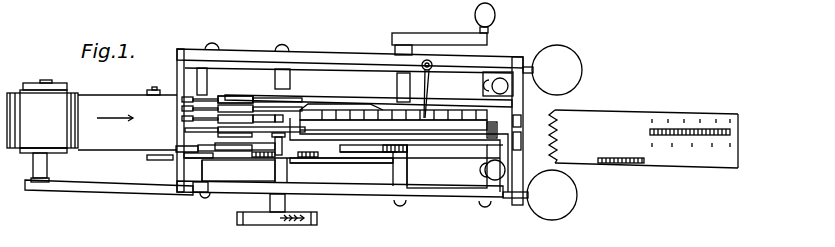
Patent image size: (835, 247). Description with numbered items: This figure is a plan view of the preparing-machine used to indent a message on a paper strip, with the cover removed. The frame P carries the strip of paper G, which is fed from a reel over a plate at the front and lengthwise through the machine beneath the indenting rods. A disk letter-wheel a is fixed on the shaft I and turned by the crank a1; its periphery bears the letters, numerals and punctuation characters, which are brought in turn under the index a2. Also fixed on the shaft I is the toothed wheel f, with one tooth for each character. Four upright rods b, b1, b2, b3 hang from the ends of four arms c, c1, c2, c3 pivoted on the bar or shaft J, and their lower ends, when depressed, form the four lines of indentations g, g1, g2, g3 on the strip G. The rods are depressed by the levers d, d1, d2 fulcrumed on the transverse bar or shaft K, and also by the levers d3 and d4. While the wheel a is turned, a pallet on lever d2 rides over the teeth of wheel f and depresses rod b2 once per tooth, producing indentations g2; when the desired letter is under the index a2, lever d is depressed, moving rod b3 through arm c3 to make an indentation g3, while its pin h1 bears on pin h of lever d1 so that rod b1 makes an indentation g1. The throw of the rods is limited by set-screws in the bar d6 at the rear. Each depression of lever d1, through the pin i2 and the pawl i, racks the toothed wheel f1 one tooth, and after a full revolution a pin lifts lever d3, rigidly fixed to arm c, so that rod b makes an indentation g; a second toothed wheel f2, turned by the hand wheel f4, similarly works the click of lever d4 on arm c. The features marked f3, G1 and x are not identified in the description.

The frame P is at (416, 41).
The crank a1 is at (490, 18).
The index a2 is at (433, 89).
The disk-wheel a is at (399, 155).
The lever d is at (380, 131).
The lever d1 is at (471, 166).
The lever d2 is at (393, 98).
The lever d3 is at (245, 142).
The lever d4 is at (238, 170).
The bar d6 is at (506, 60).
The upright rod b is at (176, 149).
The upright rod b1 is at (181, 121).
The upright rod b2 is at (181, 110).
The upright rod b3 is at (181, 102).
The arm c is at (197, 161).
The arm c1 is at (245, 129).
The arm c2 is at (268, 119).
The arm c3 is at (212, 96).
The toothed wheel f is at (277, 144).
The toothed wheel f1 is at (395, 119).
The toothed wheel f2 is at (303, 159).
The rod f3 is at (235, 137).
The crank or hand wheel f4 is at (317, 218).
The pawl i is at (340, 160).
The pin i2 is at (372, 162).
The shaft I is at (375, 165).
The bar or shaft J is at (201, 187).
The transverse bar or shaft K is at (277, 209).
The strip of paper G is at (100, 137).
The scale strip G1 is at (643, 149).
The line of indentations g is at (609, 161).
The line of indentations g1 is at (674, 146).
The line of indentations g2 is at (674, 133).
The line of indentations g3 is at (675, 121).
The pin h is at (521, 141).
The pin h1 is at (521, 122).
The direction arrow x is at (115, 113).